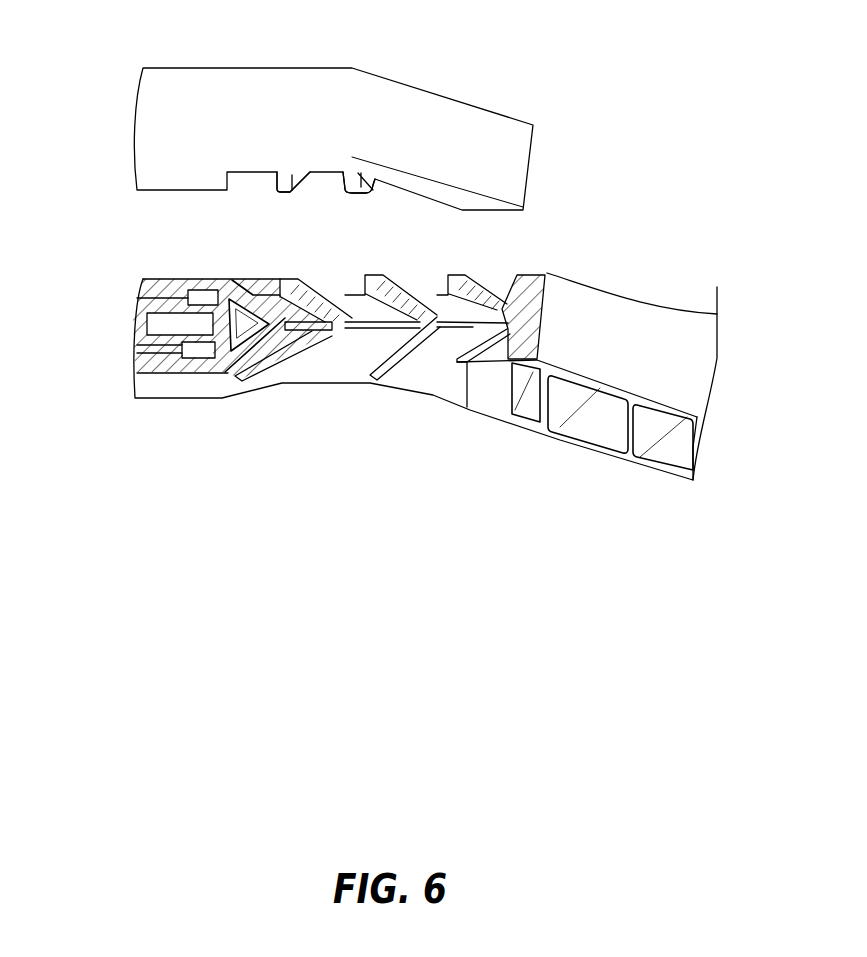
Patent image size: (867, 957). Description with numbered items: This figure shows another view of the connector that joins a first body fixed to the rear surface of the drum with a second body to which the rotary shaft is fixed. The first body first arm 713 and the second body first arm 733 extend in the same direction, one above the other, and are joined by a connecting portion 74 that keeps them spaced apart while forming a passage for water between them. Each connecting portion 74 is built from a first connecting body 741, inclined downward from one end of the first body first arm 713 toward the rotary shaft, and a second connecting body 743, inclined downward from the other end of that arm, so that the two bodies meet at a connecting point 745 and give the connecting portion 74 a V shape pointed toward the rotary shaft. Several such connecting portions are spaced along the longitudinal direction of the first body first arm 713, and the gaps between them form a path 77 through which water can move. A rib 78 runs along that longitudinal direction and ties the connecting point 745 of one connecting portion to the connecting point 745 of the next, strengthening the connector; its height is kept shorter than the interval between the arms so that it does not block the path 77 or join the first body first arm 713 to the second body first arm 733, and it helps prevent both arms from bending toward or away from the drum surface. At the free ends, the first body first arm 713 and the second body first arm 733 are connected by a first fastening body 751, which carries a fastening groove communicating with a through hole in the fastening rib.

The second body first arm 733 is at (482, 120).
The first connecting body 741 is at (277, 187).
The second connecting body 743 is at (206, 295).
The connecting point 745 is at (365, 277).
The first fastening body 751 is at (196, 354).
The rib 78 is at (303, 324).
The first body first arm 713 is at (331, 384).
The connecting portion 74 is at (375, 323).
The path 77 is at (660, 430).